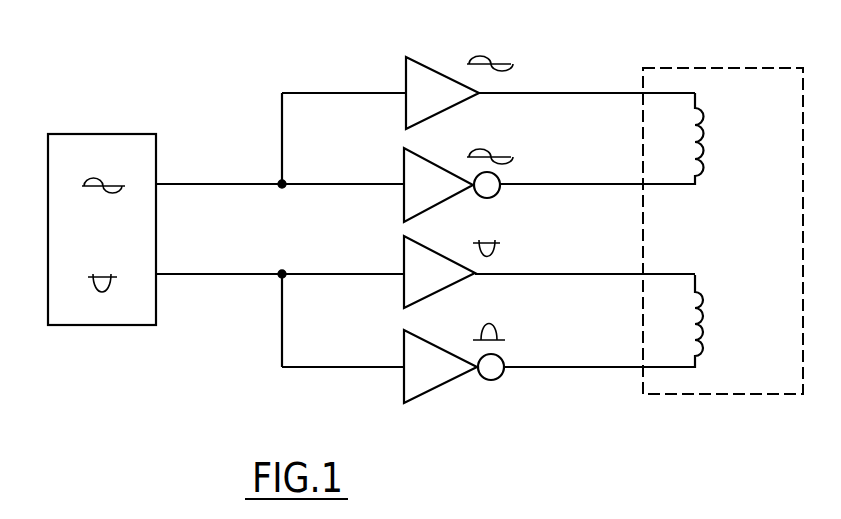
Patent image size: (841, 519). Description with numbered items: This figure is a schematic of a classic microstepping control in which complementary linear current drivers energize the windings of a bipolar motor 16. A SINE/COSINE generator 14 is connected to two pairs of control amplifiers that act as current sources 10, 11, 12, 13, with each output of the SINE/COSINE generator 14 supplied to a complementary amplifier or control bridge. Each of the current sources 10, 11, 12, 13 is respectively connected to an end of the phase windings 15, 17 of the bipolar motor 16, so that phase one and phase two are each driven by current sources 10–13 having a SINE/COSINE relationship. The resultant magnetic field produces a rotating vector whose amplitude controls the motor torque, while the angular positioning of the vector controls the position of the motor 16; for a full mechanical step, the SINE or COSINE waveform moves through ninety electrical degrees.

The current source 10 is at (406, 76).
The current source 11 is at (404, 162).
The current source 12 is at (404, 250).
The current source 13 is at (404, 345).
The SINE/COSINE generator 14 is at (157, 165).
The phase winding 15 is at (703, 160).
The bipolar motor 16 is at (643, 72).
The phase winding 17 is at (703, 296).